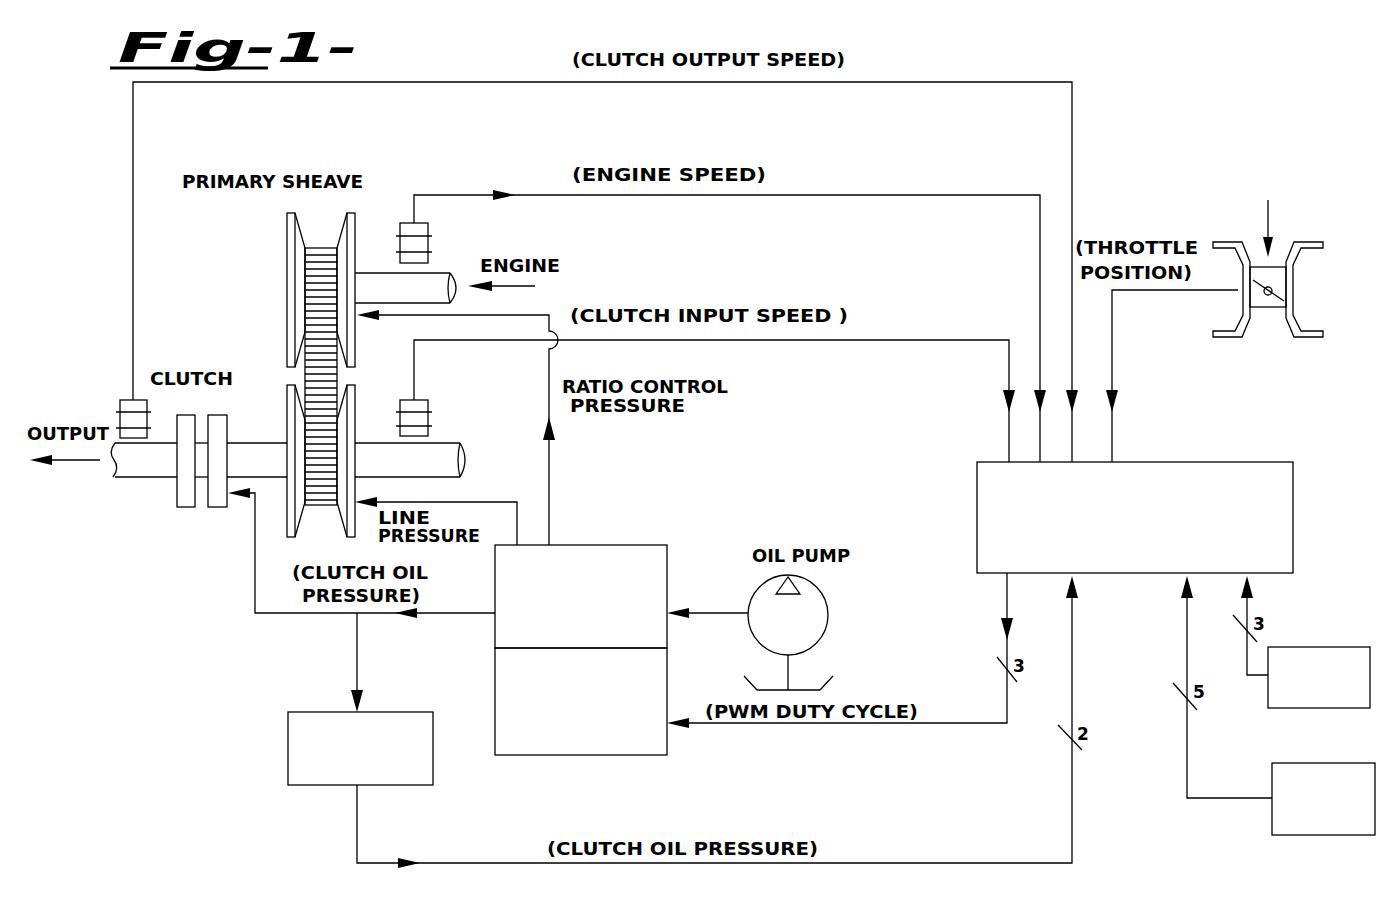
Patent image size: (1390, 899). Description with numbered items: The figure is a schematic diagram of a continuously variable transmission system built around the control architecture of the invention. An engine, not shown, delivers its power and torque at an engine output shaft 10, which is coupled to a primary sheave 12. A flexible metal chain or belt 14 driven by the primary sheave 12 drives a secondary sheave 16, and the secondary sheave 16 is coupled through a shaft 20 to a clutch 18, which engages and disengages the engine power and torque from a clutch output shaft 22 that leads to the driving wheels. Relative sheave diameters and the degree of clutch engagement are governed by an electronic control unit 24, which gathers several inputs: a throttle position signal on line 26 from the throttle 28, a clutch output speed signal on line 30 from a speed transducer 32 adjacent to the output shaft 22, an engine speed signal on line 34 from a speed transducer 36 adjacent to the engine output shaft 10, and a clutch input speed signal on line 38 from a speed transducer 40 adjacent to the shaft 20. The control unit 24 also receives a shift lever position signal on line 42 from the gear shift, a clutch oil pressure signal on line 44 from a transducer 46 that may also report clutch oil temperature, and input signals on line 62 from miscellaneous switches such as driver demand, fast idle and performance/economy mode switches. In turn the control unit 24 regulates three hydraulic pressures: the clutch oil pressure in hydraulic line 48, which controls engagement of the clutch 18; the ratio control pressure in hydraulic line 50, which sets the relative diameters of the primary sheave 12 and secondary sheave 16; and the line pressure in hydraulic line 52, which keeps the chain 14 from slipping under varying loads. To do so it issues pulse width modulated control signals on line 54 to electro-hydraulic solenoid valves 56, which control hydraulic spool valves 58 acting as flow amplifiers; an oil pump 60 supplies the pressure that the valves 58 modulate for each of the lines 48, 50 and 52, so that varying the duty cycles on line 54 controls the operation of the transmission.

The engine output shaft 10 is at (447, 273).
The primary sheave 12 is at (287, 233).
The flexible metal chain or belt 14 is at (303, 380).
The secondary sheave 16 is at (287, 422).
The clutch 18 is at (197, 520).
The shaft 20 is at (263, 468).
The clutch output shaft 22 is at (135, 477).
The electronic control unit 24 is at (987, 488).
The throttle position input signal line 26 is at (1112, 372).
The throttle 28 is at (1312, 293).
The clutch output speed signal line 30 is at (966, 82).
The speed transducer 32 is at (120, 422).
The engine speed signal line 34 is at (900, 195).
The speed transducer 36 is at (398, 245).
The clutch input speed signal line 38 is at (945, 340).
The speed transducer 40 is at (398, 420).
The shift lever position signal line 42 is at (1187, 735).
The clutch oil pressure signal line 44 is at (915, 863).
The transducer 46 is at (288, 755).
The hydraulic line 48 is at (285, 615).
The hydraulic line 50 is at (549, 470).
The hydraulic line 52 is at (517, 500).
The pulse width modulated control signal line 54 is at (985, 723).
The electro-hydraulic solenoid valves 56 is at (617, 755).
The hydraulic spool valves 58 is at (653, 560).
The oil pump 60 is at (820, 618).
The input signal line 62 is at (1250, 607).